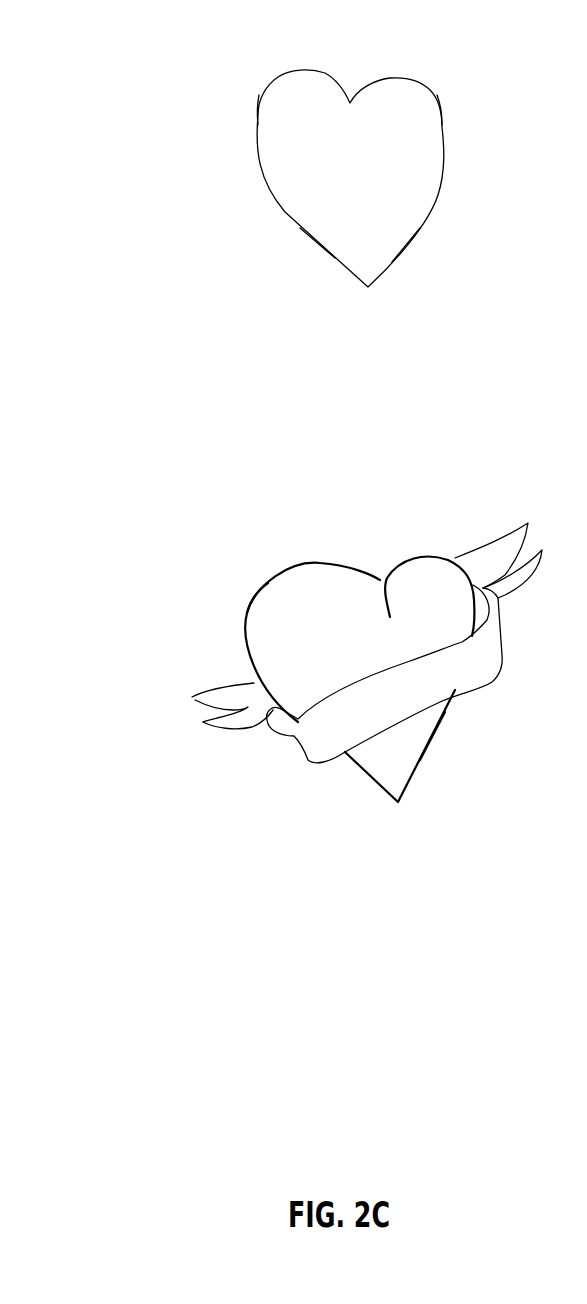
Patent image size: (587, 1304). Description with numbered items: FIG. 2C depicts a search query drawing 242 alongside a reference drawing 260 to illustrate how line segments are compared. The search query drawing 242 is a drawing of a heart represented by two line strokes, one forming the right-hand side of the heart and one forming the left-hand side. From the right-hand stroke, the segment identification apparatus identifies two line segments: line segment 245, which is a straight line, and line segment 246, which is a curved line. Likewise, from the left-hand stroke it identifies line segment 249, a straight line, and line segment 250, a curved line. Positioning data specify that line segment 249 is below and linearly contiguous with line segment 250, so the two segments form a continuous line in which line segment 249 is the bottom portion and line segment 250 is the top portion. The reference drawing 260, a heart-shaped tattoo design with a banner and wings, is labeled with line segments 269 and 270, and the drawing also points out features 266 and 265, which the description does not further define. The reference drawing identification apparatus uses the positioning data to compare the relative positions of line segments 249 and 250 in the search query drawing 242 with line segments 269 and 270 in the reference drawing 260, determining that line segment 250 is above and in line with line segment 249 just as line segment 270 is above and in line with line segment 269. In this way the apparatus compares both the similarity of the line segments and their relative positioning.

The search query drawing 242 is at (103, 52).
The line segment 250 is at (260, 102).
The line segment 246 is at (435, 102).
The line segment 249 is at (317, 242).
The line segment 245 is at (407, 242).
The reference drawing 260 is at (103, 552).
The line segment 270 is at (262, 583).
The wings 266 is at (450, 562).
The line segment 269 is at (353, 767).
The lower right edge of tattoo heart 265 is at (435, 738).